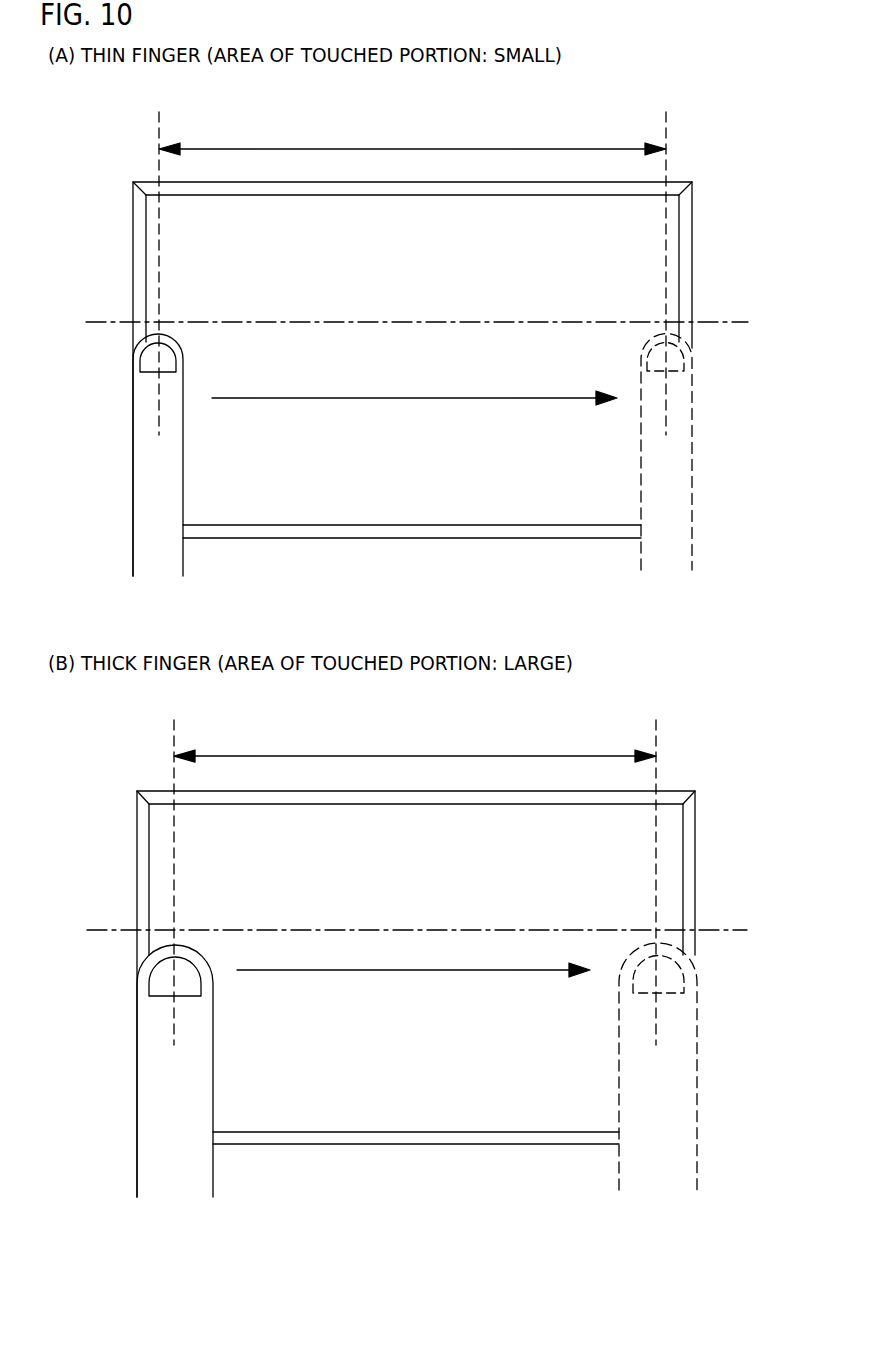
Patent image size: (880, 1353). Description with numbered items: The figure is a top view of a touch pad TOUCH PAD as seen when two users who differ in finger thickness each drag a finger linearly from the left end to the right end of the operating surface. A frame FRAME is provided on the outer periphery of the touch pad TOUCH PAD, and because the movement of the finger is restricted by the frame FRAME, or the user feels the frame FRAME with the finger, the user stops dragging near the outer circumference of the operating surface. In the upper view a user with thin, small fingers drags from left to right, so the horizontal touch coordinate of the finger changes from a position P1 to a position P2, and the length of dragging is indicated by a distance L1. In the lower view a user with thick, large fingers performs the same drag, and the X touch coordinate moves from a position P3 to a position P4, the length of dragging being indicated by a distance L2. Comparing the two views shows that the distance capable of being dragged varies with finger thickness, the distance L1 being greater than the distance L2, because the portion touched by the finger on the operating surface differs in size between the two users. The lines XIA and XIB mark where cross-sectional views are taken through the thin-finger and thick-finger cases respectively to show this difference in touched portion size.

The frame FRAME is at (692, 256).
The touch pad TOUCH PAD is at (443, 562).
The position P1 is at (158, 259).
The position P2 is at (665, 259).
The distance L1 is at (412, 135).
The line XIA- XIA is at (748, 358).
The position P3 is at (175, 868).
The position P4 is at (657, 868).
The distance L2 is at (415, 744).
The line XIB- XIB is at (747, 966).